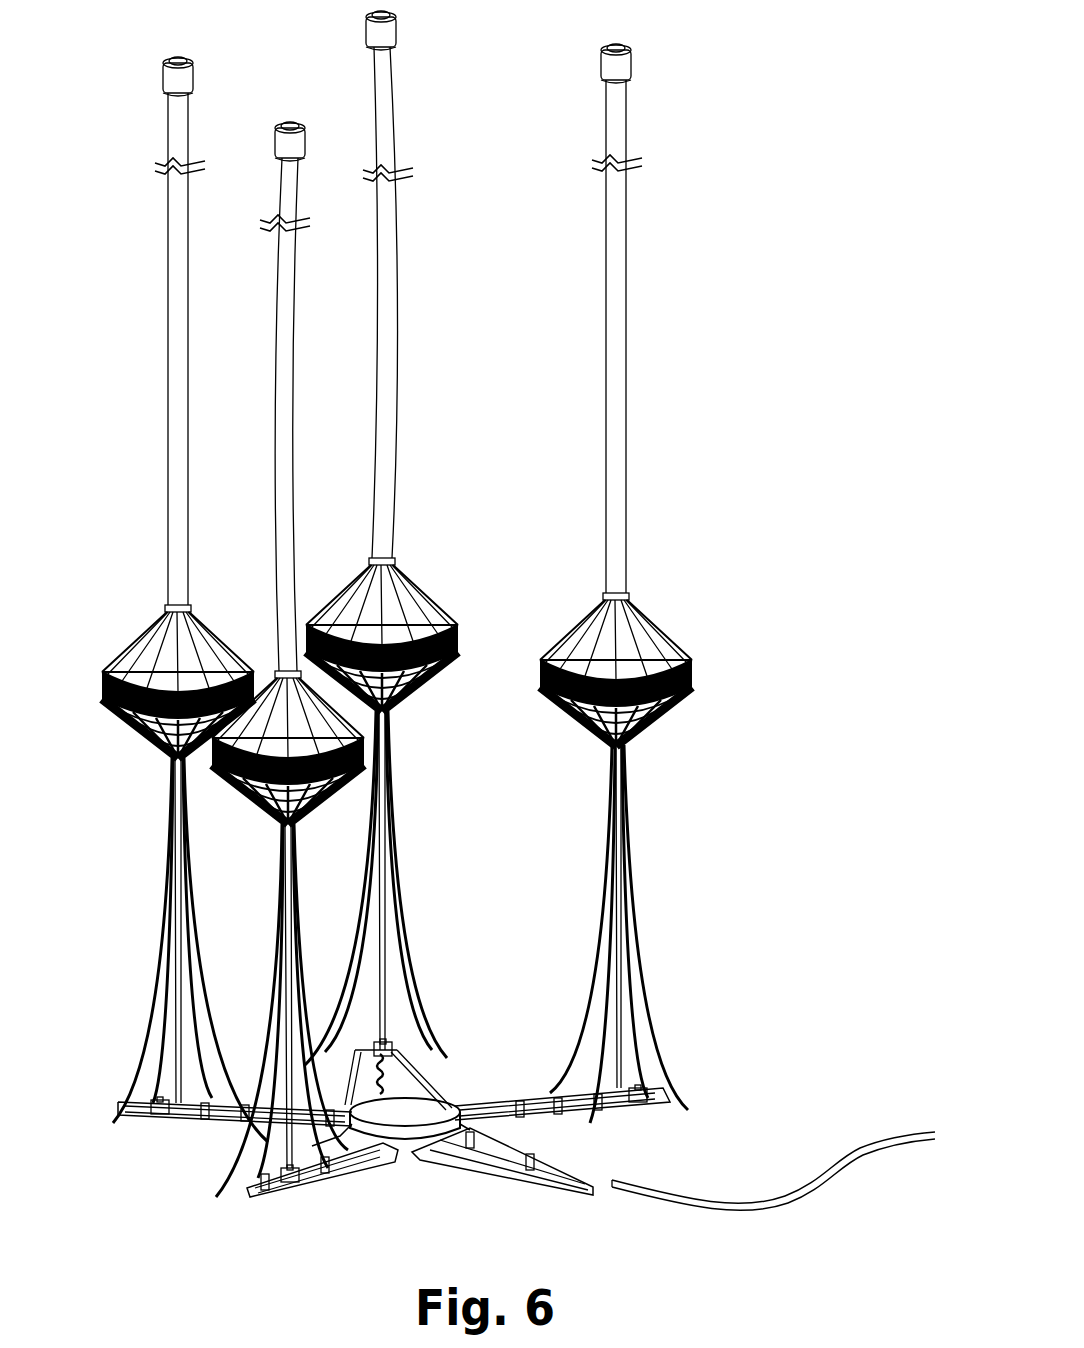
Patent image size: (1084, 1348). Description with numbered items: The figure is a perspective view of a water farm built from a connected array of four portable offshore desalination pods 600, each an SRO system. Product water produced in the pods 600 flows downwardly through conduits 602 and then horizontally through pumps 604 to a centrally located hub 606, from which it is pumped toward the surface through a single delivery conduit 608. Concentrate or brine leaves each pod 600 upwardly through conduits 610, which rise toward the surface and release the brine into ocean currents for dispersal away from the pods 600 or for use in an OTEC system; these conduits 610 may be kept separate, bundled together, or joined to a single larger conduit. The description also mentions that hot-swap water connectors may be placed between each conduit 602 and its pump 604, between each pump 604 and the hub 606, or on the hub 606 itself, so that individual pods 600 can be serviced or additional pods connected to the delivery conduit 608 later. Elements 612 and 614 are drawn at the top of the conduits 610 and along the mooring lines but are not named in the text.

The portable offshore desalination system (pod) 600 is at (119, 621).
The conduit 602 is at (683, 990).
The pump 604 is at (185, 1115).
The hub 606 is at (445, 1105).
The delivery conduit 608 is at (760, 1196).
The conduit 610 is at (189, 318).
The top cap 612 is at (185, 82).
The mooring line 614 is at (140, 1080).